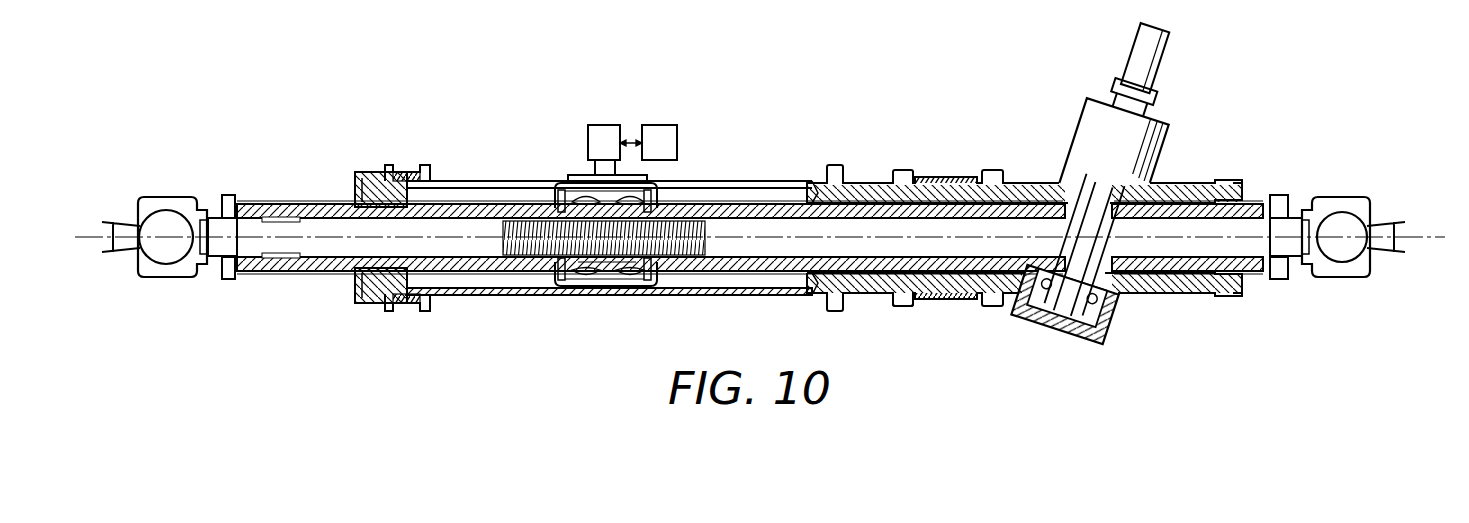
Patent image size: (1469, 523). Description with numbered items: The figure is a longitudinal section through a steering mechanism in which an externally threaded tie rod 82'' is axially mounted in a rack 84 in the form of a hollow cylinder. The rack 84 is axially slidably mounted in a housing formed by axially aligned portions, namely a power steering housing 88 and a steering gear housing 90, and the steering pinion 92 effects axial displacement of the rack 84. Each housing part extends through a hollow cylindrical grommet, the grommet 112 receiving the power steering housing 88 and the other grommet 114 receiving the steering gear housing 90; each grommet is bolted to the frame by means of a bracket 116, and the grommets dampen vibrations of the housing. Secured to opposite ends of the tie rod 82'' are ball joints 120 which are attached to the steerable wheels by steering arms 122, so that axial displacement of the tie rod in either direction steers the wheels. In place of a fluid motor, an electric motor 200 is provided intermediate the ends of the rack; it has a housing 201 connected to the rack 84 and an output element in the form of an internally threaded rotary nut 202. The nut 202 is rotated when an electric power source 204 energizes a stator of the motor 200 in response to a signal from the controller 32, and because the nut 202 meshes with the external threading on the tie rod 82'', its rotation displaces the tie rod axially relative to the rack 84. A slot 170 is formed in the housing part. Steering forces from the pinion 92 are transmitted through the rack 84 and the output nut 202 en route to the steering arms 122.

The controller 32 is at (660, 130).
The tie rod 82'' is at (755, 265).
The rack 84 is at (1177, 268).
The power steering housing 88 is at (757, 292).
The steering gear housing 90 is at (867, 293).
The steering pinion 92 is at (1075, 272).
The grommet 112 is at (399, 177).
The grommet 114 is at (936, 298).
The bracket 116 is at (427, 168).
The ball joint 120 is at (163, 210).
The steering arm 122 is at (104, 222).
The slot 170 is at (758, 187).
The electric motor 200 is at (597, 274).
The housing 201 is at (574, 197).
The rotary nut 202 is at (615, 264).
The electric power source 204 is at (607, 132).